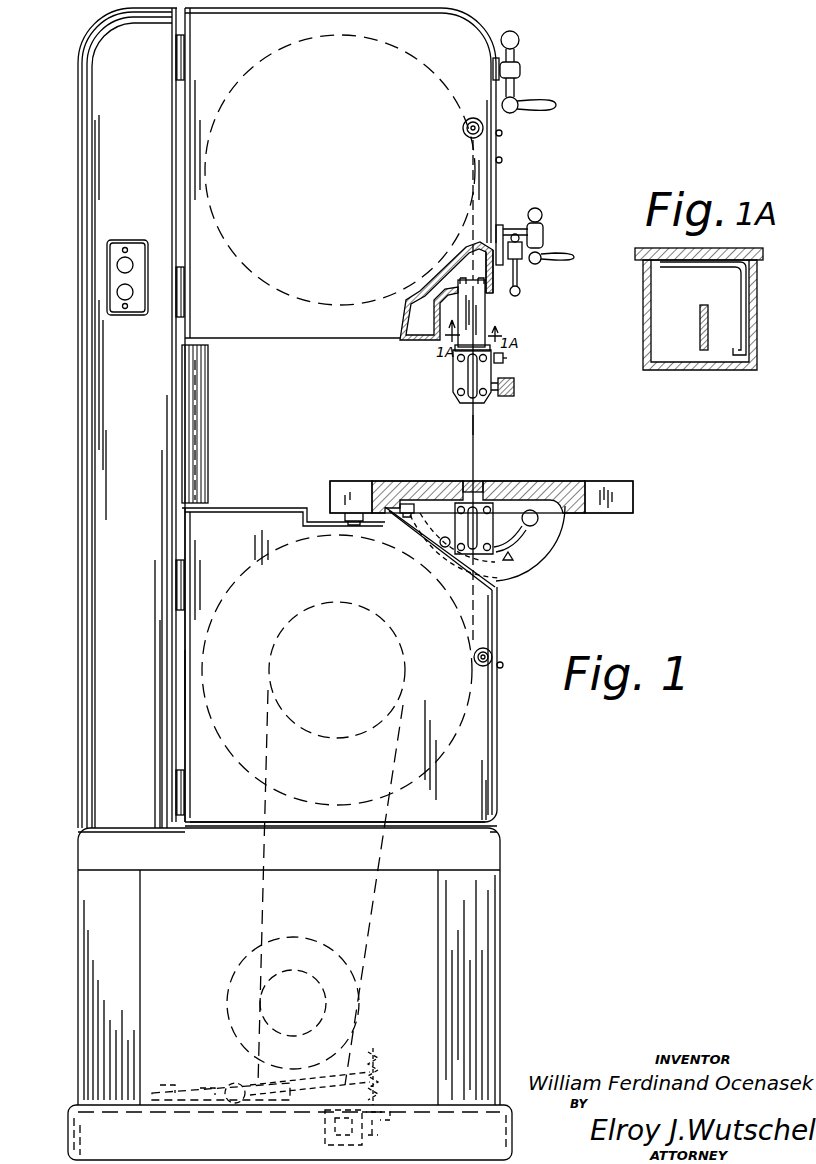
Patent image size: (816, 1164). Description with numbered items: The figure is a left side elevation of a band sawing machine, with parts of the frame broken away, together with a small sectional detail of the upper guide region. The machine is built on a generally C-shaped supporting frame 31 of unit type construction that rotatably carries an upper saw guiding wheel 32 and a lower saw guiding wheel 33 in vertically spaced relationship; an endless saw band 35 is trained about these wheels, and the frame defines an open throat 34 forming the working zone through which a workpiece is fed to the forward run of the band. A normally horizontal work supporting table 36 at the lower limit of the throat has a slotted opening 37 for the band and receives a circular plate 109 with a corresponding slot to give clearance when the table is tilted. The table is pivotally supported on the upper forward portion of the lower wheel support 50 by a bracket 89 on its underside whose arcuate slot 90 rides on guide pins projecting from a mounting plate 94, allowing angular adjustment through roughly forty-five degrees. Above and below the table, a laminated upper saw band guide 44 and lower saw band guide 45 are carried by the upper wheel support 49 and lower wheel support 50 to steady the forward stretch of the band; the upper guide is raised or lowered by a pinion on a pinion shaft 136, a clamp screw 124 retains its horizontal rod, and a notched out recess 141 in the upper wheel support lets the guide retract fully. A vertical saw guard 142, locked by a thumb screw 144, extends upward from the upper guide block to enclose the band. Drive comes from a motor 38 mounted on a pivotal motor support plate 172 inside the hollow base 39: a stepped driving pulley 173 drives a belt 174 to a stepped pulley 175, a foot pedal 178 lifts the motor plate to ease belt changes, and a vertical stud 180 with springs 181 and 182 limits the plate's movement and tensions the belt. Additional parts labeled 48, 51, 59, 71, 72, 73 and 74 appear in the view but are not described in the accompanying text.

In FIG. 1, the supporting frame 31 is at (566, 610).
In FIG. 1, the upper saw guiding wheel 32 is at (240, 80).
In FIG. 1, the lower saw guiding wheel 33 is at (455, 742).
In FIG. 1, the open throat 34 is at (437, 425).
In FIG. 1, the saw band 35 is at (220, 396).
In FIG. 1A, the saw band 35 is at (709, 318).
In FIG. 1, the work supporting table 36 is at (634, 497).
In FIG. 1, the slotted opening 37 is at (489, 478).
In FIG. 1, the motor 38 is at (230, 1002).
In FIG. 1, the hollow base 39 is at (482, 936).
In FIG. 1, the upper saw band guide 44 is at (447, 380).
In FIG. 1, the lower saw band guide 45 is at (448, 500).
In FIG. 1, the control switch box 48 is at (108, 168).
In FIG. 1, the upper wheel support 49 is at (416, 345).
In FIG. 1A, the upper wheel support 49 is at (645, 335).
In FIG. 1, the lower wheel support 50 is at (490, 823).
In FIG. 1, the base top band 51 is at (302, 822).
In FIG. 1, the lower door hinge side 59 is at (186, 688).
In FIG. 1, the upper door 71 is at (458, 48).
In FIG. 1A, the upper door 71 is at (735, 249).
In FIG. 1, the lower door 72 is at (480, 732).
In FIG. 1, the column 73 is at (210, 407).
In FIG. 1, the frame 74 is at (502, 775).
In FIG. 1, the bracket 89 is at (540, 529).
In FIG. 1, the arcuate slot 90 is at (512, 542).
In FIG. 1, the mounting plate 94 is at (503, 565).
In FIG. 1, the circular plate 109 is at (462, 478).
In FIG. 1, the clamp screw 124 is at (516, 385).
In FIG. 1, the pinion shaft 136 is at (445, 497).
In FIG. 1, the notched out recess 141 is at (497, 302).
In FIG. 1, the vertical saw guard 142 is at (478, 320).
In FIG. 1A, the vertical saw guard 142 is at (666, 270).
In FIG. 1, the thumb screw 144 is at (506, 359).
In FIG. 1, the motor support plate 172 is at (265, 1100).
In FIG. 1, the driving pulley 173 is at (298, 972).
In FIG. 1, the belt 174 is at (362, 1030).
In FIG. 1, the stepped pulley 175 is at (405, 650).
In FIG. 1, the foot pedal 178 is at (322, 1125).
In FIG. 1, the vertical stud 180 is at (396, 1122).
In FIG. 1, the spring 181 is at (385, 1085).
In FIG. 1, the spring 182 is at (400, 1090).